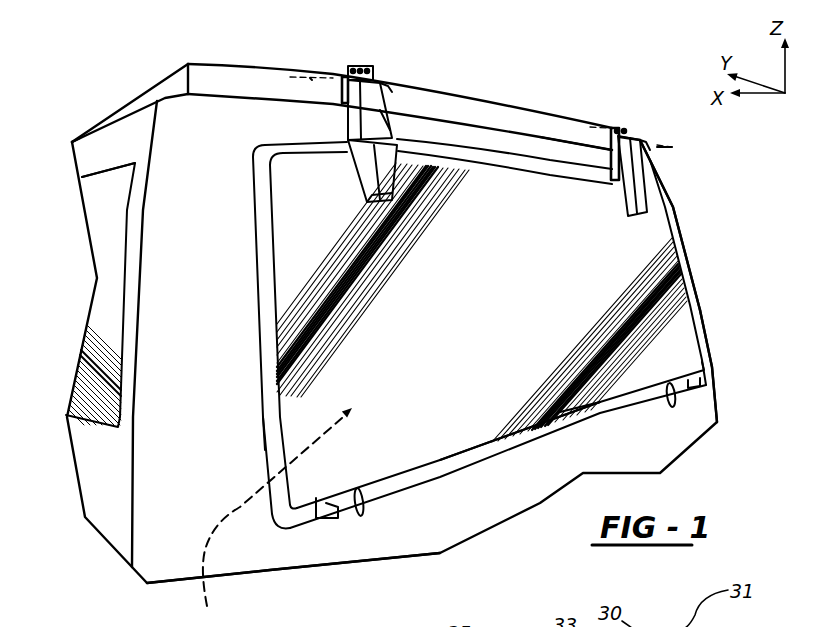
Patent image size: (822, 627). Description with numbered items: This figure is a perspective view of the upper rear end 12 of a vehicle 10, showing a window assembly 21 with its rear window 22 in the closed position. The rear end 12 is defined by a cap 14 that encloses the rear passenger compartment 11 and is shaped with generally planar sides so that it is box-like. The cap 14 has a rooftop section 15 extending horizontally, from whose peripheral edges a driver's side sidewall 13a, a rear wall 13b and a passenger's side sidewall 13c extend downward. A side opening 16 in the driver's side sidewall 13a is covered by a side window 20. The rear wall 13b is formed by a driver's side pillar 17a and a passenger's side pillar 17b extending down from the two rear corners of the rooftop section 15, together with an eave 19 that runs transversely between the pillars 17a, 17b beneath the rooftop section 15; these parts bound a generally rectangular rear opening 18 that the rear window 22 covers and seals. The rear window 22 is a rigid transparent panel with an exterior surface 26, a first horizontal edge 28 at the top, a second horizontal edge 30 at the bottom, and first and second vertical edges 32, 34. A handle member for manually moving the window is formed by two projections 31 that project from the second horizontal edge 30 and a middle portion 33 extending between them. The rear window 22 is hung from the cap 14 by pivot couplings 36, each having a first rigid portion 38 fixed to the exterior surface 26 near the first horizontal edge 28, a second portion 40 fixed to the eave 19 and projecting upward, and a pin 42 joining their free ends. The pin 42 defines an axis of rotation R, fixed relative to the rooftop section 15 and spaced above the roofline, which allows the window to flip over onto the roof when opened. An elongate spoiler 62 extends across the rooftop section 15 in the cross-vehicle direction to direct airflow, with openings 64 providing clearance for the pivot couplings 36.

The vehicle 10 is at (62, 80).
The passenger compartment 11 is at (276, 517).
The upper rear end 12 is at (736, 158).
The driver's side sidewall 13a is at (103, 457).
The rear wall 13b is at (450, 507).
The passenger's side sidewall 13c is at (685, 252).
The cap 14 is at (82, 140).
The rooftop section 15 is at (95, 150).
The side opening 16 is at (83, 413).
The driver's side pillar 17a is at (208, 235).
The passenger's side pillar 17b is at (700, 298).
The rear opening 18 is at (270, 436).
The eave 19 is at (550, 155).
The side window 20 is at (110, 203).
The window assembly 21 is at (530, 355).
The rear window 22 is at (342, 460).
The exterior surface 26 is at (527, 290).
The first horizontal edge 28 is at (510, 167).
The second horizontal edge 30 is at (538, 504).
The projections 31 is at (362, 505).
The first vertical edge 32 is at (270, 262).
The middle portion 33 is at (483, 450).
The second vertical edge 34 is at (670, 215).
The pivot coupling 36 is at (383, 127).
The first rigid portion 38 is at (378, 140).
The second portion 40 is at (343, 76).
The pin 42 is at (368, 72).
The spoiler 62 is at (198, 77).
The openings 64 is at (385, 86).
The axis of rotation R is at (310, 78).